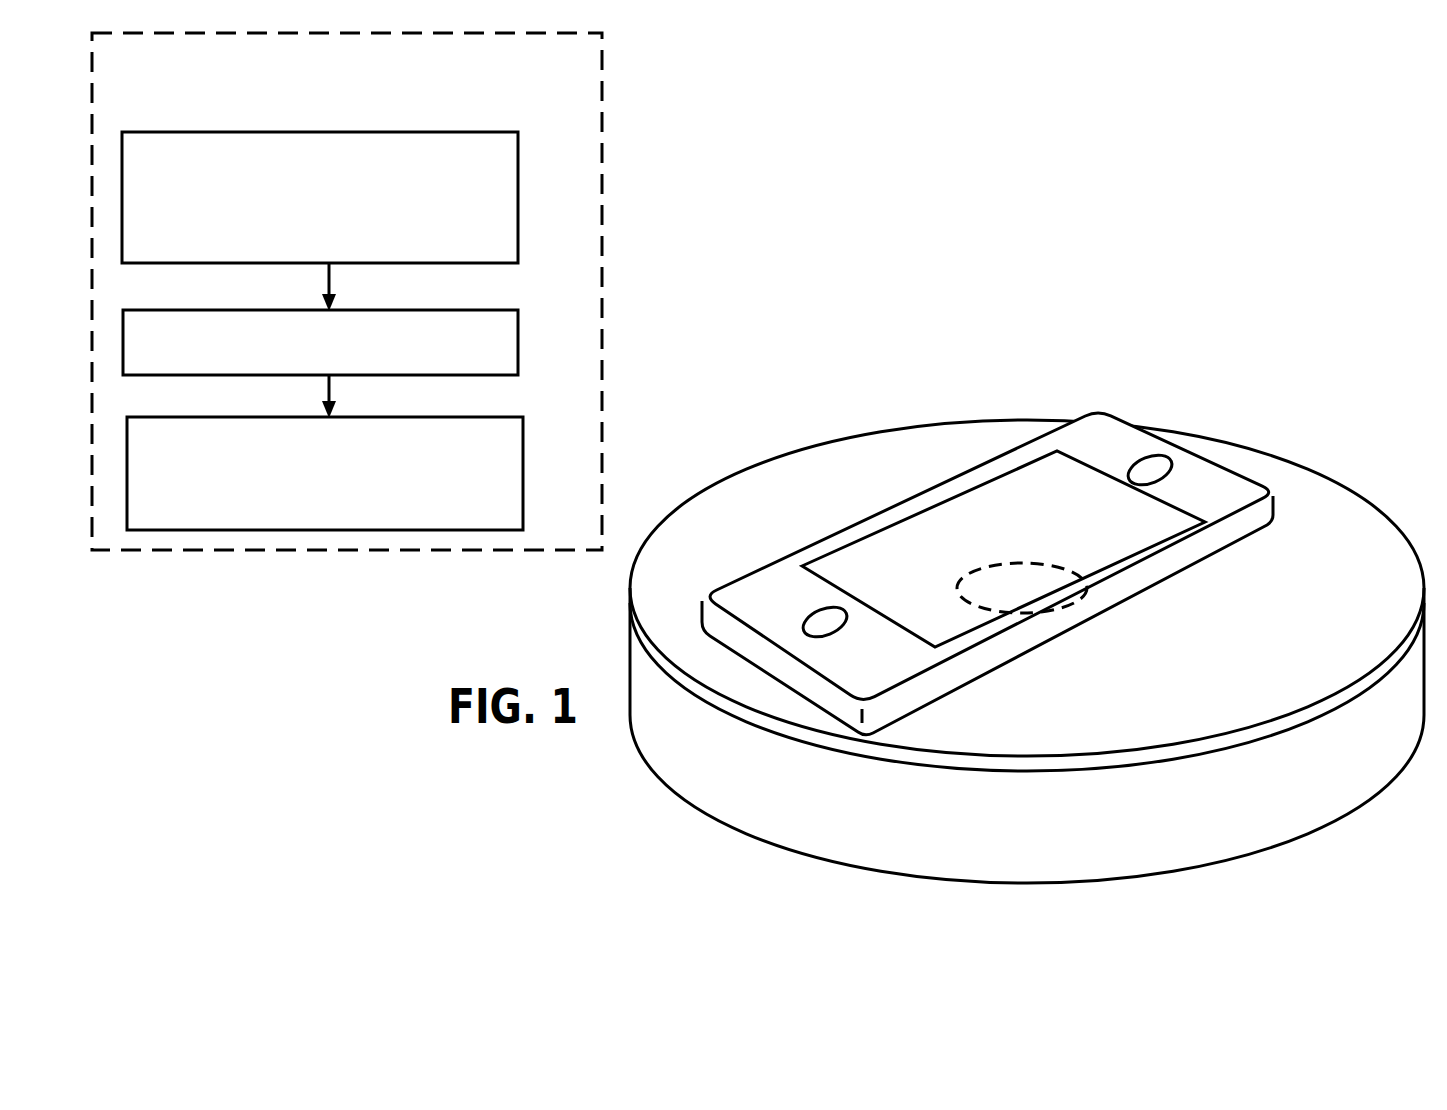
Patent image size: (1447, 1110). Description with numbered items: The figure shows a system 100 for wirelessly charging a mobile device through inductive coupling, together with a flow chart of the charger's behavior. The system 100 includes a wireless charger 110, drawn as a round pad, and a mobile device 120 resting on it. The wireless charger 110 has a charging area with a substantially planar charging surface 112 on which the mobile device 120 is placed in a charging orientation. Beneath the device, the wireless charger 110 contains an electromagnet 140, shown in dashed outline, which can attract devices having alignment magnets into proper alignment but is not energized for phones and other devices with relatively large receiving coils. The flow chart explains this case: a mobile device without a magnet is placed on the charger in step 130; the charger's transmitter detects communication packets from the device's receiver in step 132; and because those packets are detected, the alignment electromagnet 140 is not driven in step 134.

The system 100 is at (1272, 376).
The wireless charger 110 is at (1340, 858).
The charging surface 112 is at (1338, 523).
The mobile device 120 is at (1203, 574).
The step of placing mobile device on charging surface 130 is at (518, 173).
The step of detecting communication packets 132 is at (518, 332).
The step of not driving electromagnet 134 is at (523, 443).
The electromagnet 140 is at (1037, 564).